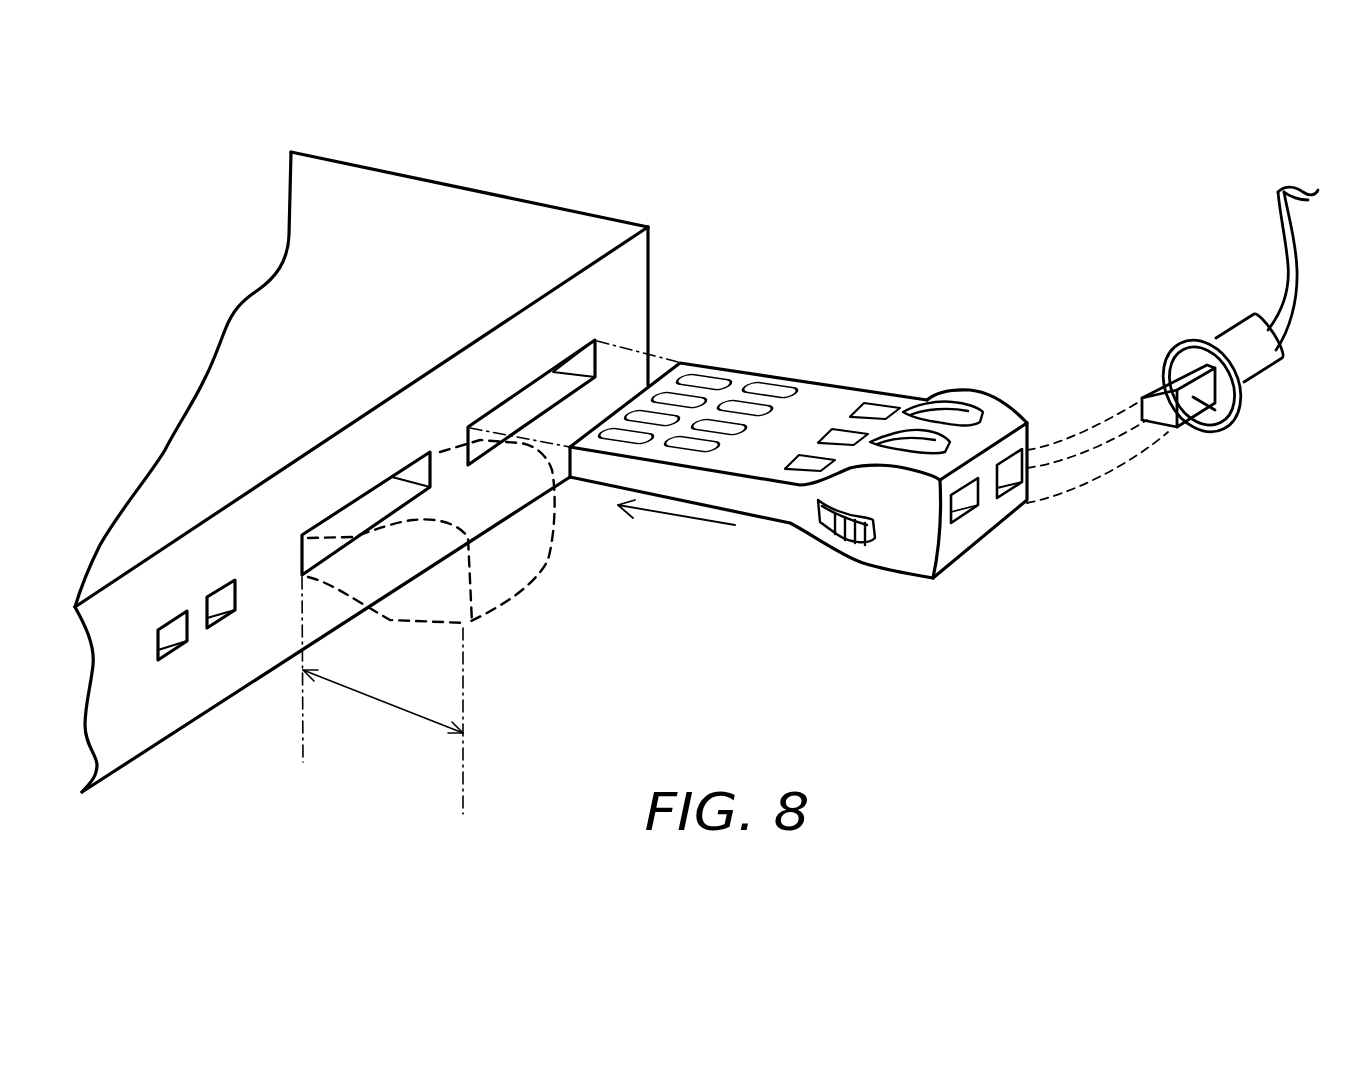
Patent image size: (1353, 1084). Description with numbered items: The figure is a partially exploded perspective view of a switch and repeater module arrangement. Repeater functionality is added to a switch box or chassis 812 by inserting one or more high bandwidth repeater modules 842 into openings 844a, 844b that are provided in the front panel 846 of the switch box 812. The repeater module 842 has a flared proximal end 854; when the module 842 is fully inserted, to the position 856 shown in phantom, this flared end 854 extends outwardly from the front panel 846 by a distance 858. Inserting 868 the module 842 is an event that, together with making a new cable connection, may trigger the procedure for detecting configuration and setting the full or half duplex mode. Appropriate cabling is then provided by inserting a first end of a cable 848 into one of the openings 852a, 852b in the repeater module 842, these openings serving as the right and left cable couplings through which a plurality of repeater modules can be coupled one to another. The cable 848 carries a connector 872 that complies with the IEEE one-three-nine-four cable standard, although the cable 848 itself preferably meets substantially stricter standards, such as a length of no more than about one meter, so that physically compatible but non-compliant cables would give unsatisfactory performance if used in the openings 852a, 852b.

The switch box 812 is at (480, 190).
The front panel 846 is at (637, 272).
The opening 844a is at (508, 390).
The opening 844b is at (360, 495).
The repeater module 842 is at (805, 375).
The flared proximal end 854 is at (905, 545).
The opening 852a is at (1002, 435).
The opening 852b is at (967, 528).
The inserting 868 is at (692, 518).
The fully inserted position 856 is at (493, 603).
The distance 858 is at (410, 715).
The cable 848 is at (1283, 292).
The connector 872 is at (1215, 427).